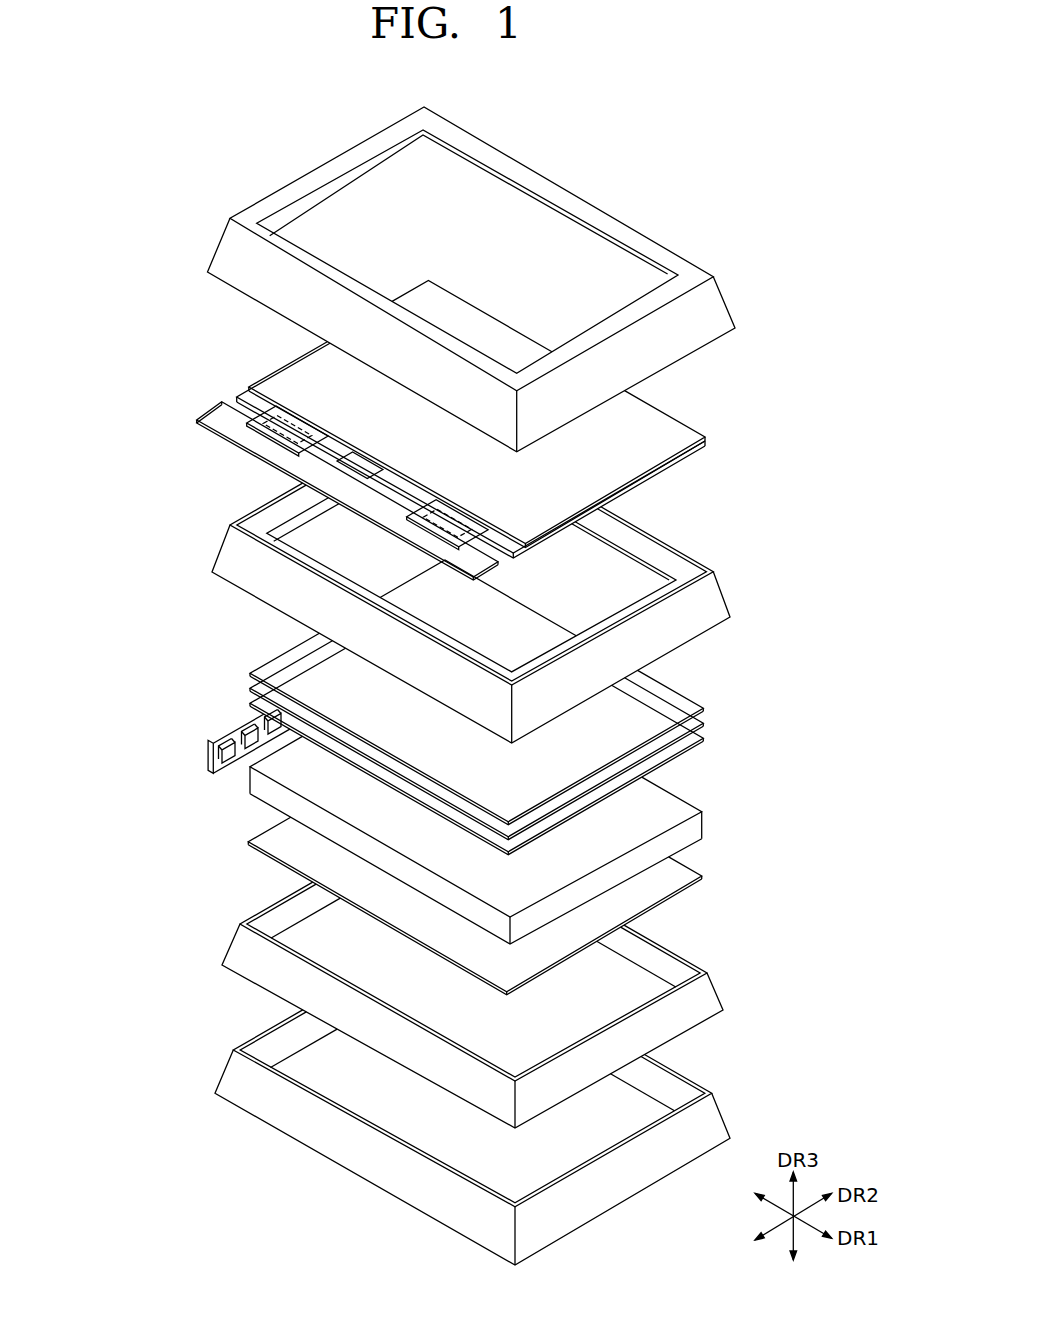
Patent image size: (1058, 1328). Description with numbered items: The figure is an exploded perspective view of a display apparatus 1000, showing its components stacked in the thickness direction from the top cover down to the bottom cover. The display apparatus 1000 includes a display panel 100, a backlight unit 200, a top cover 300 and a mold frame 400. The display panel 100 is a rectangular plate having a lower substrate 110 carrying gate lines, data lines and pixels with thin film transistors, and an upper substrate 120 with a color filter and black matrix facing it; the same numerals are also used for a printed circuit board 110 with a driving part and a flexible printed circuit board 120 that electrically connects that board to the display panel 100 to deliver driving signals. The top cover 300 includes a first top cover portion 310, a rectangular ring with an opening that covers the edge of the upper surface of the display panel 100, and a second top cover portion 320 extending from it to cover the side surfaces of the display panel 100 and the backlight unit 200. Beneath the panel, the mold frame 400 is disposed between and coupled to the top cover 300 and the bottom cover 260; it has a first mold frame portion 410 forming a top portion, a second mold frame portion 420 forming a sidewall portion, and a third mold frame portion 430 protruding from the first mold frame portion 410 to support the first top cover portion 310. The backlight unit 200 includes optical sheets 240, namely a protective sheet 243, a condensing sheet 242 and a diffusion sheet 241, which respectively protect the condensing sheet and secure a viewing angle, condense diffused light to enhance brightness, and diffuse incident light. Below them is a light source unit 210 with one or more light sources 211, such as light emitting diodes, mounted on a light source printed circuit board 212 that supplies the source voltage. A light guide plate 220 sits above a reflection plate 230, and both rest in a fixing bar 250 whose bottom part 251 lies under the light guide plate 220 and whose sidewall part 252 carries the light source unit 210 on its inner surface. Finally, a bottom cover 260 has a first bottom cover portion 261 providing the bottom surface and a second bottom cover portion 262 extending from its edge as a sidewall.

The display apparatus 1000 is at (672, 142).
The display panel 100 is at (787, 407).
The lower substrate 110 is at (700, 457).
The upper substrate 120 is at (693, 432).
The top cover 300 is at (801, 245).
The first top cover portion 310 is at (691, 277).
The second top cover portion 320 is at (715, 303).
The mold frame 400 is at (801, 540).
The first mold frame portion 410 is at (682, 568).
The second mold frame portion 420 is at (713, 603).
The third mold frame portion 430 is at (708, 587).
The backlight unit 200 is at (84, 665).
The optical sheets 240 is at (136, 640).
The diffusion sheet 241 is at (257, 702).
The condensing sheet 242 is at (257, 687).
The protective sheet 243 is at (264, 673).
The light source unit 210 is at (136, 729).
The light source 211 is at (232, 757).
The light source printed circuit board 212 is at (213, 740).
The light guide plate 220 is at (262, 788).
The reflection plate 230 is at (268, 838).
The fixing bar 250 is at (136, 893).
The bottom part 251 is at (313, 938).
The sidewall part 252 is at (238, 950).
The bottom cover 260 is at (136, 1020).
The first bottom cover portion 261 is at (307, 1065).
The second bottom cover portion 262 is at (238, 1075).